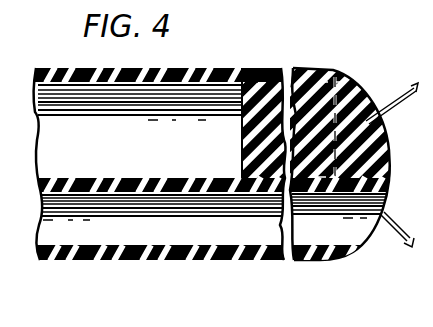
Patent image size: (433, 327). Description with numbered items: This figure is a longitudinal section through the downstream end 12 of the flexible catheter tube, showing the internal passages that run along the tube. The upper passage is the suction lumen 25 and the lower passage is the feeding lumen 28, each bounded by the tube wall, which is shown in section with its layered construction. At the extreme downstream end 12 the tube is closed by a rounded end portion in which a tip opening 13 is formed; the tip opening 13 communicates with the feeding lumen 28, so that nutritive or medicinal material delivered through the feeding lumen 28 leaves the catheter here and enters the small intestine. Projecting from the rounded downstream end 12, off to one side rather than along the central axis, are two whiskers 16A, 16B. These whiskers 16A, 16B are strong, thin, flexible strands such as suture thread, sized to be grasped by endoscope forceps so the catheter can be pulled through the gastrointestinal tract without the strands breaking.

The downstream end 12 is at (362, 70).
The tip opening 13 is at (343, 228).
The whisker 16A is at (409, 90).
The whisker 16B is at (408, 240).
The suction lumen 25 is at (136, 147).
The feeding lumen 28 is at (138, 237).